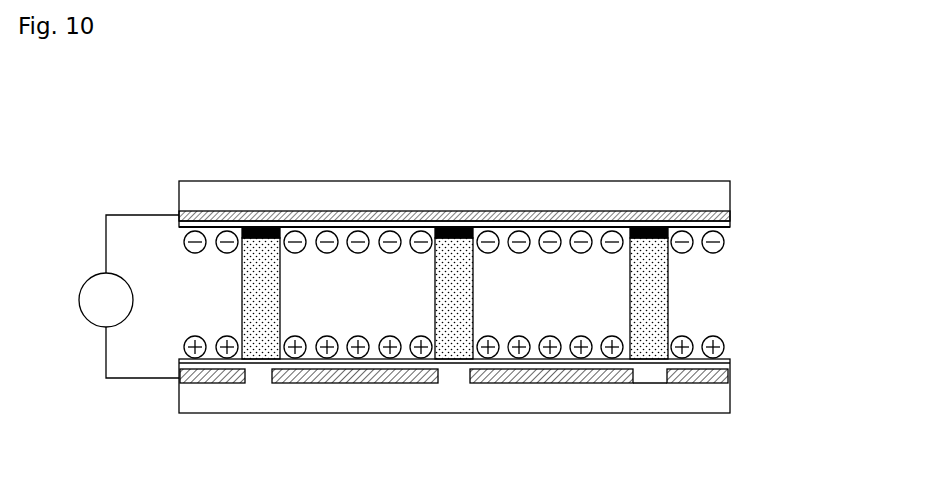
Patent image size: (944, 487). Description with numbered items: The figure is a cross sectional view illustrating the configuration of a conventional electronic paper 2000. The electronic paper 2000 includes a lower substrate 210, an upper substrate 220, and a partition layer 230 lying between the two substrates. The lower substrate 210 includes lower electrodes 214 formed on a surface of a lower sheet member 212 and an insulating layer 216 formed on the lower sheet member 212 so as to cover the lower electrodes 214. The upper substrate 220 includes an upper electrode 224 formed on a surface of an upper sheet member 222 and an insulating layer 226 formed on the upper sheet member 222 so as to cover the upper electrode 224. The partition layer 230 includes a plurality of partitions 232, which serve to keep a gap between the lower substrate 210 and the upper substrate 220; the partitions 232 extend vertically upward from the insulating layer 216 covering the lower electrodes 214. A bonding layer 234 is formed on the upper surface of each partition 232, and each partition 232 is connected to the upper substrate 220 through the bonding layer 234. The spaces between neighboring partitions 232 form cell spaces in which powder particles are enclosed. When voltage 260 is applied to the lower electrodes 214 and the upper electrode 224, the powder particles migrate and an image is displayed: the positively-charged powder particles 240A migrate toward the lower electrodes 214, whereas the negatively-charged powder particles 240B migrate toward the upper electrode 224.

The electronic paper 2000 is at (742, 135).
The upper substrate 220 is at (770, 182).
The upper sheet member 222 is at (593, 190).
The upper electrode 224 is at (680, 213).
The insulating layer 226 is at (541, 225).
The partition layer 230 is at (770, 230).
The partition 232 is at (256, 275).
The bonding layer 234 is at (457, 230).
The negatively-charged powder particles 240B is at (375, 232).
The positively-charged powder particles 240A is at (395, 350).
The lower substrate 210 is at (770, 360).
The lower sheet member 212 is at (287, 402).
The lower electrodes 214 is at (200, 377).
The insulating layer 216 is at (648, 372).
The voltage 260 is at (90, 278).